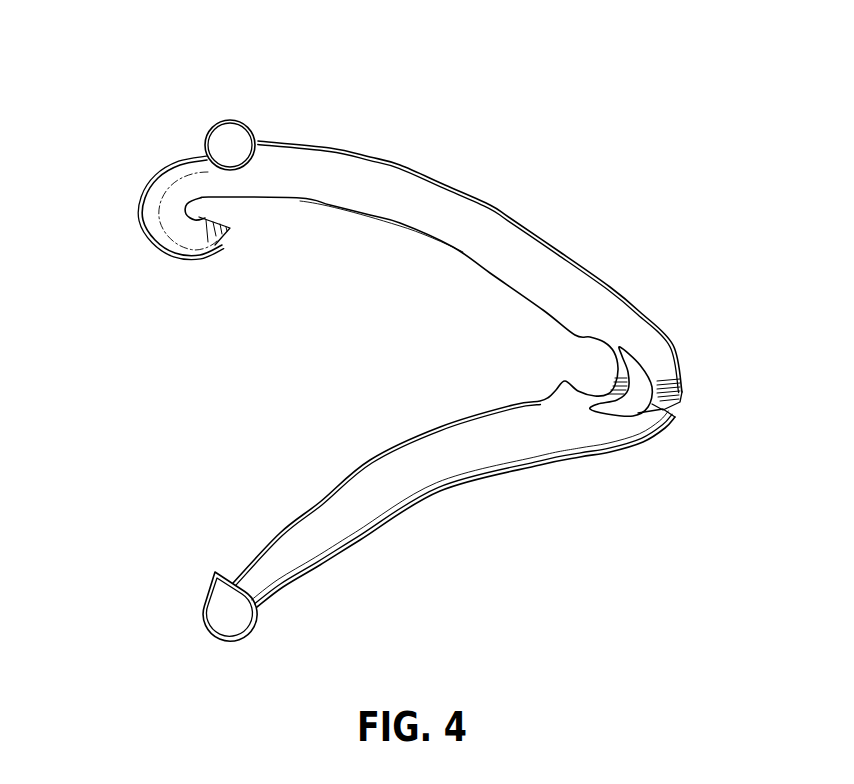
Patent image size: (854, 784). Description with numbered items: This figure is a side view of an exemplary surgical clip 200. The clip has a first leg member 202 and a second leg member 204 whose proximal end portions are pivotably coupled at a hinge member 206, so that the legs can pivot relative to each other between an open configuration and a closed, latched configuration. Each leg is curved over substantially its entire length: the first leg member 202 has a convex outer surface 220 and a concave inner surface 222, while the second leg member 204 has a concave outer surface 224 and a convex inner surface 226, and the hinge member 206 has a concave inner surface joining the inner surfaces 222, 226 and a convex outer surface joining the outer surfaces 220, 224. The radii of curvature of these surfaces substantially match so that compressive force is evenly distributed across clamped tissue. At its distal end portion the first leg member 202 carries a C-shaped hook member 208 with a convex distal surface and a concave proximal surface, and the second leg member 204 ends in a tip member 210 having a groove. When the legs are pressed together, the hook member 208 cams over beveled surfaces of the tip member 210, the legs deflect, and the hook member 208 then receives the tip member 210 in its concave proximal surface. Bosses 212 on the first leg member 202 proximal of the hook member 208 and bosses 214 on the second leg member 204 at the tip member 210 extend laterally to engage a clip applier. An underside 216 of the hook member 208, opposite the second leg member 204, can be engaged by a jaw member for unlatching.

The surgical clip 200 is at (630, 210).
The first leg member 202 is at (391, 116).
The second leg member 204 is at (568, 490).
The hinge member 206 is at (666, 369).
The hook member 208 is at (150, 209).
The tip member 210 is at (260, 647).
The bosses 212 is at (231, 139).
The bosses 214 is at (222, 612).
The underside 216 is at (167, 248).
The convex outer surface 220 is at (537, 235).
The concave inner surface 222 is at (463, 254).
The concave outer surface 224 is at (428, 493).
The convex inner surface 226 is at (370, 459).